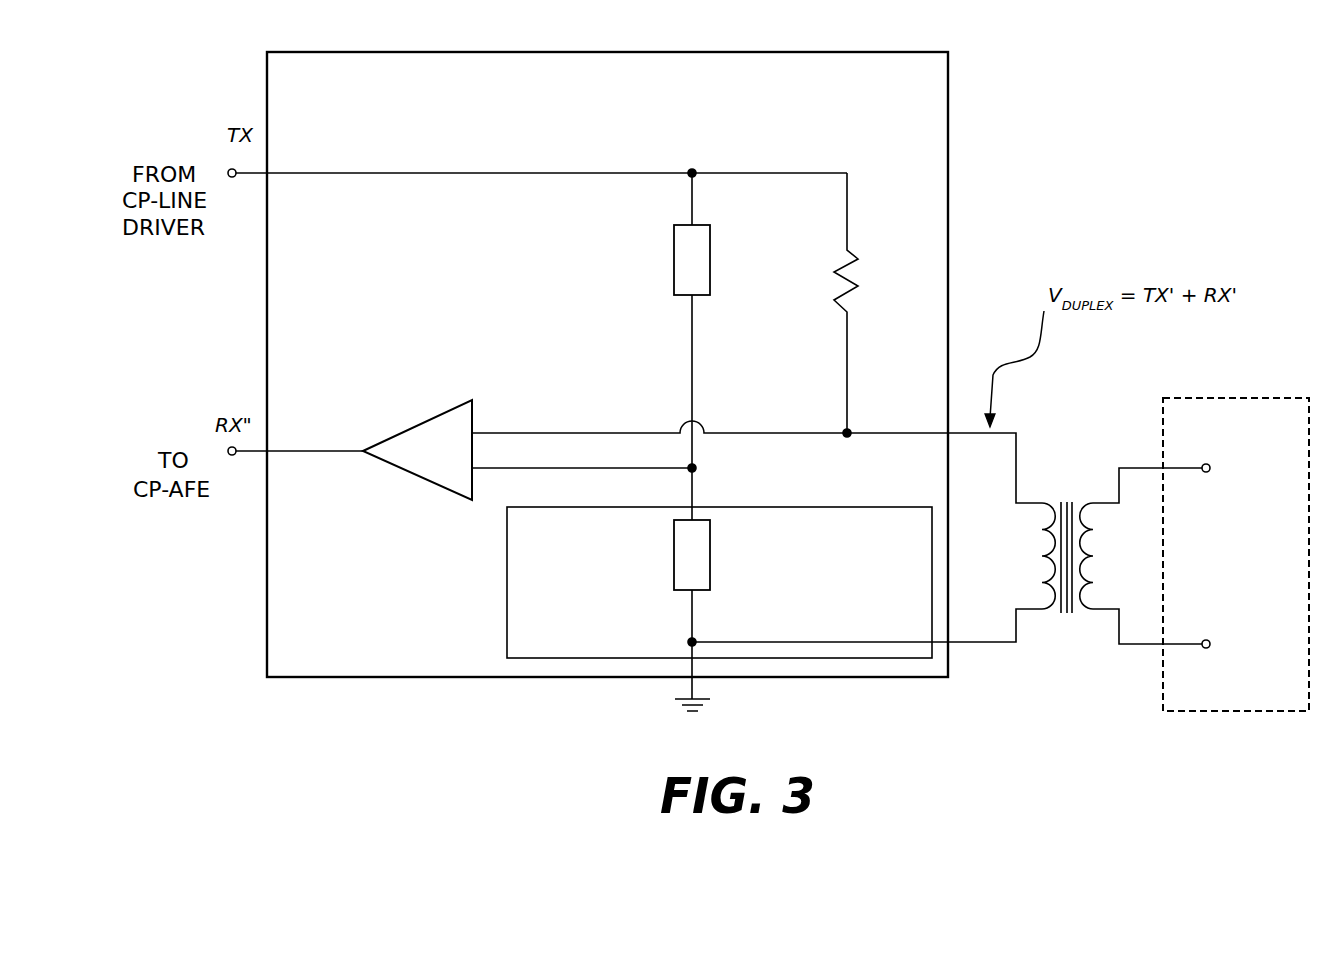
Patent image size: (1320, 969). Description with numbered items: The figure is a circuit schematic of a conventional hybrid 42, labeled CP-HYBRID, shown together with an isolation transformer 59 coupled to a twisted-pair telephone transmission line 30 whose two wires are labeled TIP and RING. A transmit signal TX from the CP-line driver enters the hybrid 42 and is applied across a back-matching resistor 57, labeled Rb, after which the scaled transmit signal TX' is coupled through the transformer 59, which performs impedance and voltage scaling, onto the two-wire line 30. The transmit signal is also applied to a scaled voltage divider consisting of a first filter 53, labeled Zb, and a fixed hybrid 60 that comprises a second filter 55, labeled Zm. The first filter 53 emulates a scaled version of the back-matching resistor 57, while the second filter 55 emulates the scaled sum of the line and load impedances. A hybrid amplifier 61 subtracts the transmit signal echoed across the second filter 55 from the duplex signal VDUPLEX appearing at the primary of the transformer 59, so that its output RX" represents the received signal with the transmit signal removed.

The twisted-pair telephone transmission line 30 is at (1208, 398).
The hybrid 42 is at (858, 52).
The first filter 53 is at (700, 225).
The second filter 55 is at (675, 550).
The back-matching resistor 57 is at (858, 275).
The transformer 59 is at (1050, 580).
The fixed hybrid 60 is at (837, 507).
The hybrid amplifier 61 is at (432, 413).